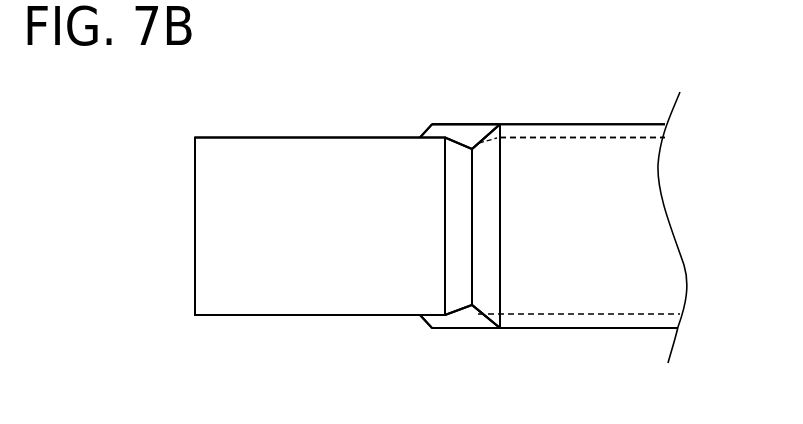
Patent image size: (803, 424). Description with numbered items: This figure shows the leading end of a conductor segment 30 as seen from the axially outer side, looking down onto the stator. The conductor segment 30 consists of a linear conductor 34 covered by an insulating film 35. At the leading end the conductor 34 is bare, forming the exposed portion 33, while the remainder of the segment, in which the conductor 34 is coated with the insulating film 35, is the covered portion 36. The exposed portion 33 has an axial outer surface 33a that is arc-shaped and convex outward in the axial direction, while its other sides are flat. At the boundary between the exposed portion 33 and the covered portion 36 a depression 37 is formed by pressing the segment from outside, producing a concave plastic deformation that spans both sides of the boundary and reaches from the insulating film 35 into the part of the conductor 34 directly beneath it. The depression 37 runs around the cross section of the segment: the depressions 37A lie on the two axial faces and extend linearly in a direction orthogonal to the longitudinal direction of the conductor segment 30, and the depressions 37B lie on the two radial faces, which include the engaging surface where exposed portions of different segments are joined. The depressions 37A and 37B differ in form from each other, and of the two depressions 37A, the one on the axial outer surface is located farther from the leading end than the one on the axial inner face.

The conductor segment 30 is at (714, 108).
The exposed portion 33 is at (250, 138).
The axial outer surface 33a is at (343, 150).
The conductor 34 is at (575, 152).
The insulating film 35 is at (630, 124).
The covered portion 36 is at (615, 328).
The depression 37 is at (472, 214).
The depression on axial face 37A is at (485, 288).
The depression on radial face 37B is at (477, 130).